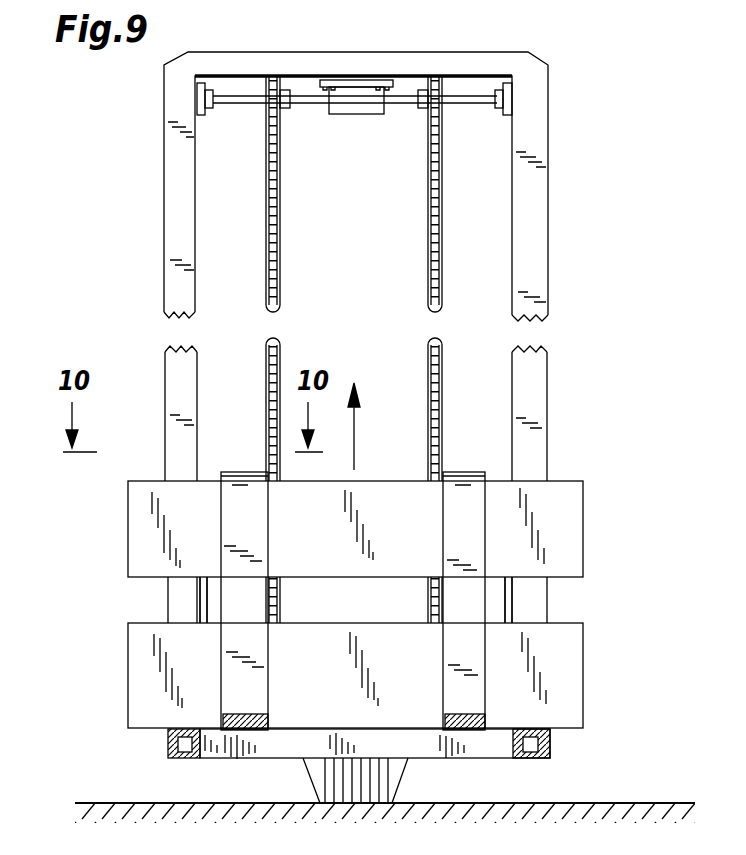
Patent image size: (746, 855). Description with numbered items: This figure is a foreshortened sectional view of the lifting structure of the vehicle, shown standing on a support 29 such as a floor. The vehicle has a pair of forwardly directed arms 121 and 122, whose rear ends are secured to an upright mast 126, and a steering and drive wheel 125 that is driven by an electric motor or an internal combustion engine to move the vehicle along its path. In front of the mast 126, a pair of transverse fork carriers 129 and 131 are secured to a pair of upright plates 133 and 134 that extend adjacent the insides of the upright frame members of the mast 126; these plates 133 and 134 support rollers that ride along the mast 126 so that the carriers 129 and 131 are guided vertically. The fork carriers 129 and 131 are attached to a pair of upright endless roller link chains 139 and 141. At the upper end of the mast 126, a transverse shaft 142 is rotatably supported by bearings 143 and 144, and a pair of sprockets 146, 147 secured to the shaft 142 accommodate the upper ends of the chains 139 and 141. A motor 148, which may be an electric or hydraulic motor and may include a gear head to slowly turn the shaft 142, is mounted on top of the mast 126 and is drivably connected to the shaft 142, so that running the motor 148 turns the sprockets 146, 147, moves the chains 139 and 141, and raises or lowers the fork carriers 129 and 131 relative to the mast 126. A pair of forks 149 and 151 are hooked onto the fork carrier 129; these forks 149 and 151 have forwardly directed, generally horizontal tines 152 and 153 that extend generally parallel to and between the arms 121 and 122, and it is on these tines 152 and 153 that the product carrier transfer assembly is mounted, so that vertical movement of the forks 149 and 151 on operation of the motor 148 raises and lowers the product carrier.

The support 29 is at (625, 802).
The forwardly directed arm 121 is at (178, 761).
The forwardly directed arm 122 is at (532, 760).
The steering and drive wheel 125 is at (393, 791).
The upright mast 126 is at (542, 213).
The fork carrier 129 is at (572, 520).
The fork carrier 131 is at (573, 670).
The upright plate 133 is at (200, 592).
The upright plate 134 is at (512, 598).
The endless roller link chain 139 is at (427, 245).
The endless roller link chain 141 is at (281, 244).
The transverse shaft 142 is at (462, 104).
The bearing 143 is at (510, 88).
The bearing 144 is at (200, 116).
The sprocket 146 is at (414, 110).
The sprocket 147 is at (288, 109).
The motor 148 is at (384, 120).
The fork 149 is at (263, 540).
The fork 151 is at (453, 526).
The tine 152 is at (252, 712).
The tine 153 is at (453, 714).